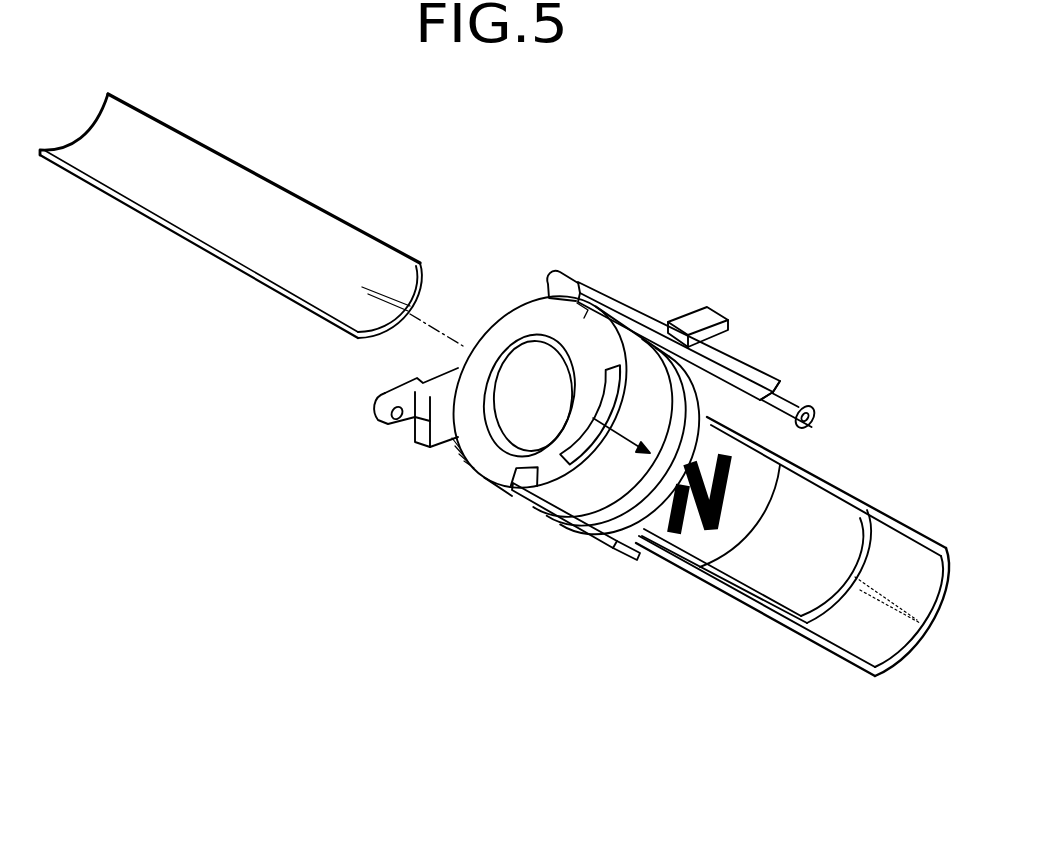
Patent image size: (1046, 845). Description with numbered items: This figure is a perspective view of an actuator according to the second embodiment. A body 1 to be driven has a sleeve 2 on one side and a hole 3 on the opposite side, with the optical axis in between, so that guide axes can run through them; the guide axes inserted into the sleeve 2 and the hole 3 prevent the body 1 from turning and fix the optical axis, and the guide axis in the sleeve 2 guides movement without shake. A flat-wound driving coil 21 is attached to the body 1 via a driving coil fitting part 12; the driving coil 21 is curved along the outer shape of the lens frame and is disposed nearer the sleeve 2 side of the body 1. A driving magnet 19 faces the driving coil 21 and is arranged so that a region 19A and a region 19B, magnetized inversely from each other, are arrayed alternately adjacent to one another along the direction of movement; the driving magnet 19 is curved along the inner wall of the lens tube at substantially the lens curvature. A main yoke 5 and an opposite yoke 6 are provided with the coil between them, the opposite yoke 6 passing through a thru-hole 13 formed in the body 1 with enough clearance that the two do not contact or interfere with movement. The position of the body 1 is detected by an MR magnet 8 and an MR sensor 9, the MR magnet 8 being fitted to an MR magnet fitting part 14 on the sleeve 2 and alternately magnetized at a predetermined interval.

The body to be driven 1 is at (483, 465).
The sleeve 2 is at (800, 396).
The hole 3 is at (390, 428).
The main yoke 5 is at (902, 547).
The opposite yoke 6 is at (297, 213).
The MR magnet 8 is at (642, 305).
The MR sensor 9 is at (707, 308).
The driving coil fitting part 12 is at (593, 520).
The thru-hole 13 is at (552, 498).
The MR magnet fitting part 14 is at (788, 380).
The driving magnet 19 is at (793, 600).
The region 19A is at (693, 548).
The region 19B is at (840, 507).
The driving coil 21 is at (627, 545).